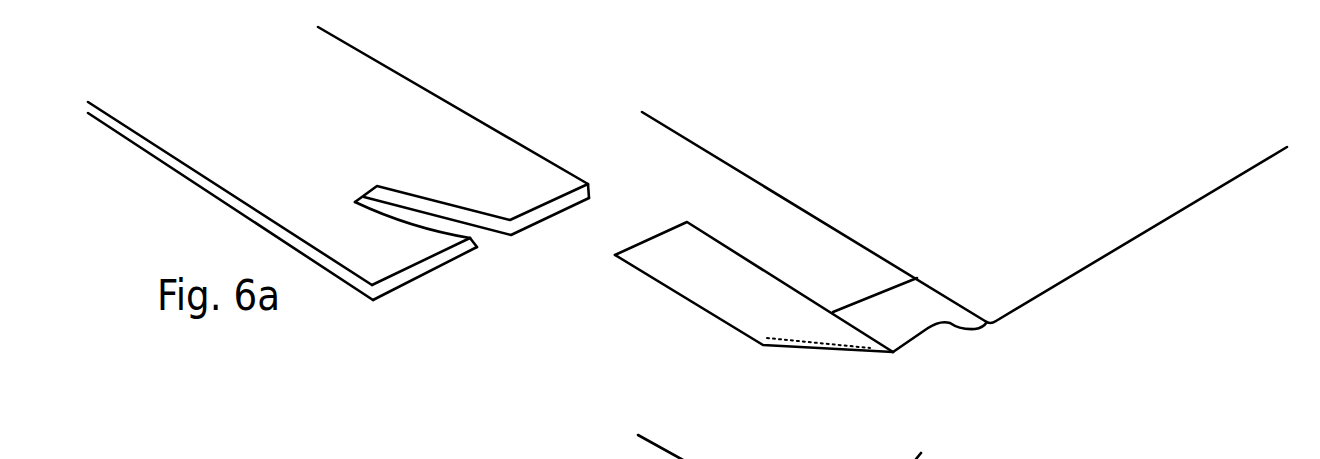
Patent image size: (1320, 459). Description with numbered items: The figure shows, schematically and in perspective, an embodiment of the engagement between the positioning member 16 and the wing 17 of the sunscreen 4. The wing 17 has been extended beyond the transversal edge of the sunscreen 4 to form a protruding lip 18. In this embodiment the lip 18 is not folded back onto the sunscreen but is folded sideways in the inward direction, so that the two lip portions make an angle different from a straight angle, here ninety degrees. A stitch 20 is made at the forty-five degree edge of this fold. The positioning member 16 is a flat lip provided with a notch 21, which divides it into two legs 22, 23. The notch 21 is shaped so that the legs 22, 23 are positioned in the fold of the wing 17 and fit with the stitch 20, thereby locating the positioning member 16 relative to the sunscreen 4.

The sunscreen 4 is at (899, 92).
The positioning member 16 is at (177, 130).
The wing 17 is at (958, 313).
The lip 18 is at (702, 282).
The stitch 20 is at (830, 377).
The notch 21 is at (473, 248).
The leg 22 is at (379, 259).
The leg 23 is at (505, 163).